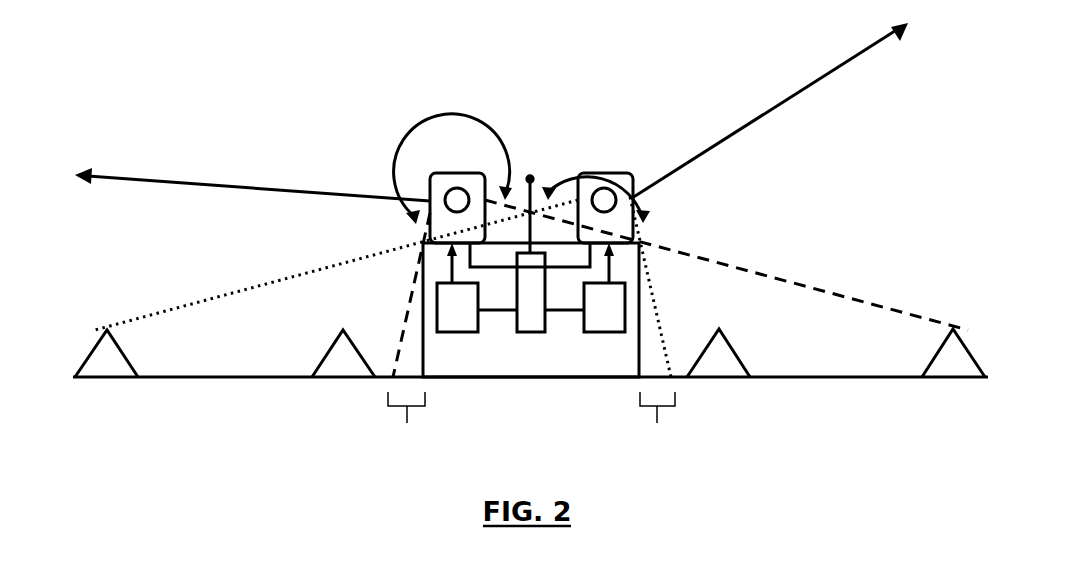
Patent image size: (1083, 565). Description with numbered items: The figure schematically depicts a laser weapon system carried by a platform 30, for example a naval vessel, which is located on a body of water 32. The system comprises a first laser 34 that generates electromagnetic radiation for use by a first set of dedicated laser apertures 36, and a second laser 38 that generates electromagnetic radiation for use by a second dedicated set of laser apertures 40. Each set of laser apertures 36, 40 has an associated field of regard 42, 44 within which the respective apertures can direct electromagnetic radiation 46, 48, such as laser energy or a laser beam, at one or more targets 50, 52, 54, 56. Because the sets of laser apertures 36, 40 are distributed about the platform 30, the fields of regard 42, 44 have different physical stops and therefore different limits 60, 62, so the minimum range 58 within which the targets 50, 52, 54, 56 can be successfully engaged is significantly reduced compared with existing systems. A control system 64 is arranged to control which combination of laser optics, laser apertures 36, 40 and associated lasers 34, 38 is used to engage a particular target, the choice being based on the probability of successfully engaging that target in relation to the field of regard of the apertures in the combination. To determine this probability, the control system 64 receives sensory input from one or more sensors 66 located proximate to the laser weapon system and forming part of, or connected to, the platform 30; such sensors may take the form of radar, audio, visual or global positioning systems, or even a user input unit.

The platform 30 is at (570, 383).
The body of water 32 is at (481, 404).
The first laser 34 is at (447, 334).
The first set of dedicated laser apertures 36 is at (458, 176).
The second laser 38 is at (595, 334).
The second dedicated set of laser apertures 40 is at (603, 181).
The field of regard 42 is at (407, 140).
The field of regard 44 is at (648, 142).
The electromagnetic radiation 46 is at (115, 168).
The electromagnetic radiation 48 is at (866, 55).
The target 50 is at (113, 357).
The target 52 is at (333, 358).
The target 54 is at (730, 357).
The target 56 is at (933, 363).
The minimum range 58 is at (531, 422).
The limit to the field of regard 60 is at (257, 282).
The limit to the field of regard 62 is at (397, 322).
The control system 64 is at (530, 334).
The sensor 66 is at (533, 172).